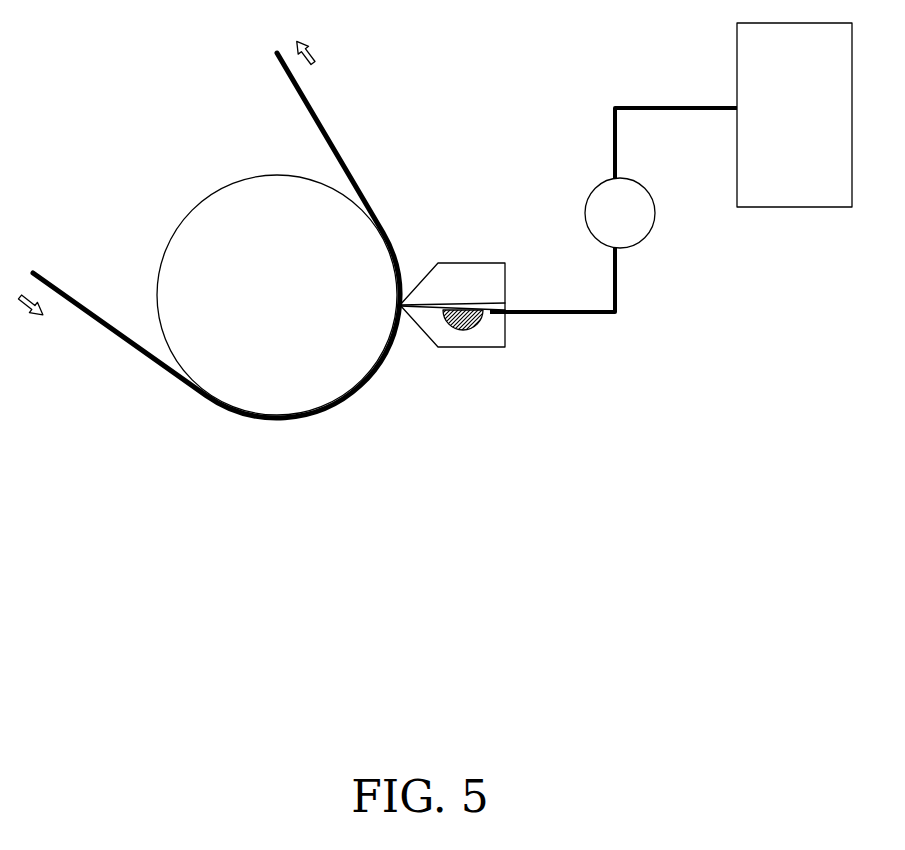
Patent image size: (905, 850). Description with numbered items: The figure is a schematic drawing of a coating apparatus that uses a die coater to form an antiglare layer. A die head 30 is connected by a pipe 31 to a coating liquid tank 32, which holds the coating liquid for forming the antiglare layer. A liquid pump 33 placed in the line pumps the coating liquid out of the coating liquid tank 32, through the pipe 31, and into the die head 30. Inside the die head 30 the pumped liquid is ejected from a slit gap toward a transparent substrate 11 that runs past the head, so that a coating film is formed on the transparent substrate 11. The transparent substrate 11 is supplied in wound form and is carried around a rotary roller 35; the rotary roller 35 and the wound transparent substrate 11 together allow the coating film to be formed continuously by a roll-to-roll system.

The transparent substrate 11 is at (122, 338).
The die head 30 is at (483, 335).
The pipe 31 is at (617, 297).
The coating liquid tank 32 is at (785, 163).
The liquid pump 33 is at (598, 227).
The rotary roller 35 is at (277, 363).